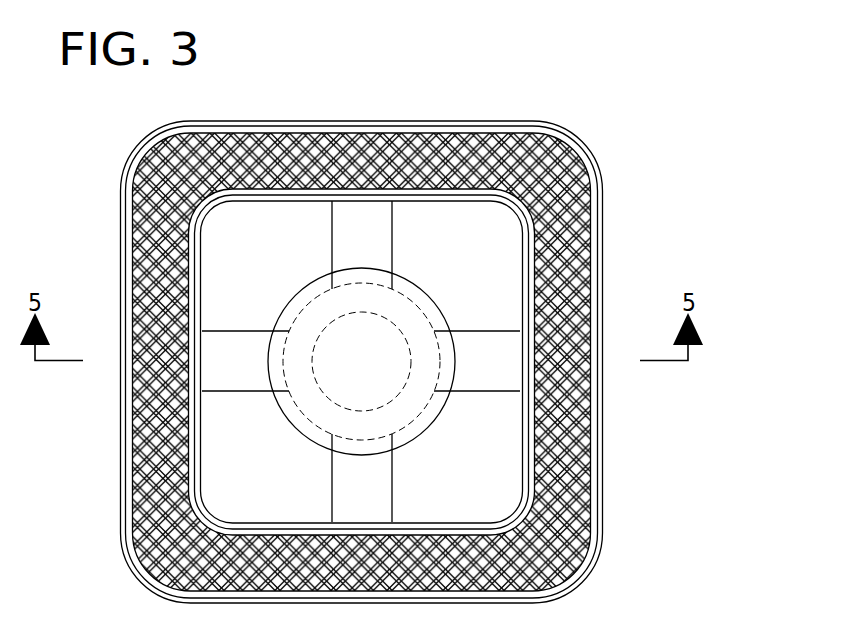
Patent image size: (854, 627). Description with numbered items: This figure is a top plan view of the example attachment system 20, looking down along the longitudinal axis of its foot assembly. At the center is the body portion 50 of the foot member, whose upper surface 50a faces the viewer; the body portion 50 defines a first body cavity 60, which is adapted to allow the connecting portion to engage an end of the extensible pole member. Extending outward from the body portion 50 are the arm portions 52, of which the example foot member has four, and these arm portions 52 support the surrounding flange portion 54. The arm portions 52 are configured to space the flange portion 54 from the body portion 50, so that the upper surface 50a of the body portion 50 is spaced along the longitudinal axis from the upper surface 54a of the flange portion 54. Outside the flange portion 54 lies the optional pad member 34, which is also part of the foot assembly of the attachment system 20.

The attachment system 20 is at (639, 193).
The pad member 34 is at (337, 130).
The body portion 50 is at (415, 442).
The upper surface of the body portion 50a is at (315, 313).
The arm portion 52 is at (373, 232).
The flange portion 54 is at (475, 128).
The upper surface of the flange portion 54a is at (499, 128).
The first body cavity 60 is at (315, 348).